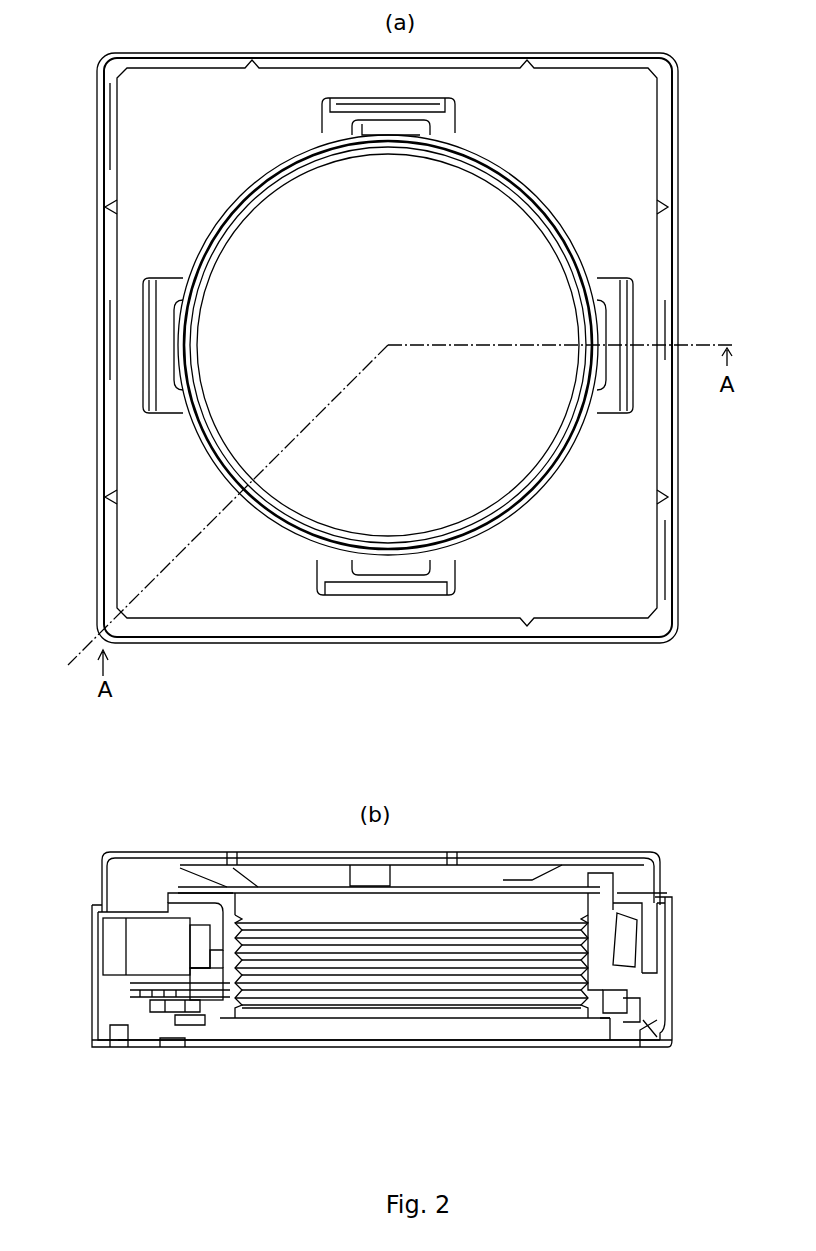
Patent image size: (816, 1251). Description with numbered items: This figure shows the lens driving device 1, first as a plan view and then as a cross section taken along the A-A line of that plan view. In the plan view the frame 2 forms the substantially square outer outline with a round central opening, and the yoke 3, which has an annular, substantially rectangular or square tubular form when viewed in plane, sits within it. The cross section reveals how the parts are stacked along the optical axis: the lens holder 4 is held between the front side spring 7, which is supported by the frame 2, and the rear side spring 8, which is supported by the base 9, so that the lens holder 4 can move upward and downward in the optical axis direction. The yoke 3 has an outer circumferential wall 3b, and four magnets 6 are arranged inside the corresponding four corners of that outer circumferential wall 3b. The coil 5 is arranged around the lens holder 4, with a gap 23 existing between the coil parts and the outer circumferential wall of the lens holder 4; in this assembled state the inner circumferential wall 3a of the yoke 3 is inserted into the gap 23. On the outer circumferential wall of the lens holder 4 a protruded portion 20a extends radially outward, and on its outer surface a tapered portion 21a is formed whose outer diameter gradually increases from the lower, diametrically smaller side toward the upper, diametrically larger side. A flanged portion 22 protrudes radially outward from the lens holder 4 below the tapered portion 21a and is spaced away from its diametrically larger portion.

The lens driving device 1 is at (715, 28).
The frame 2 is at (635, 162).
The yoke 3 is at (133, 913).
The inner circumferential wall 3a is at (217, 937).
The outer circumferential wall 3b is at (665, 965).
The lens holder 4 is at (233, 1008).
The coil 5 is at (203, 933).
The magnet 6 is at (138, 955).
The front side spring 7 is at (210, 887).
The rear side spring 8 is at (177, 1002).
The base 9 is at (632, 1030).
The protruded portion 20a is at (604, 893).
The tapered portion 21a is at (618, 940).
The flanged portion 22 is at (201, 980).
The gap 23 is at (218, 953).